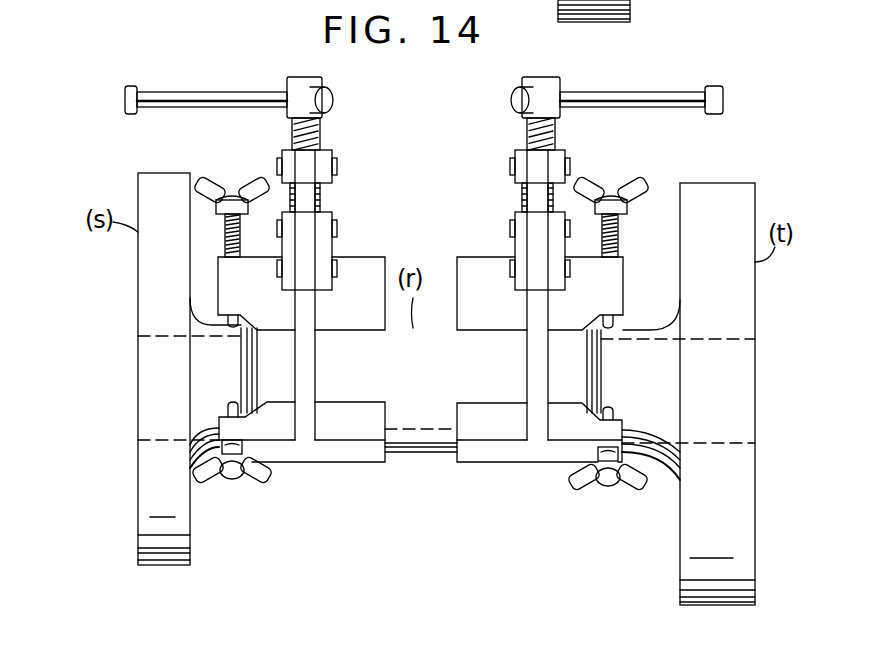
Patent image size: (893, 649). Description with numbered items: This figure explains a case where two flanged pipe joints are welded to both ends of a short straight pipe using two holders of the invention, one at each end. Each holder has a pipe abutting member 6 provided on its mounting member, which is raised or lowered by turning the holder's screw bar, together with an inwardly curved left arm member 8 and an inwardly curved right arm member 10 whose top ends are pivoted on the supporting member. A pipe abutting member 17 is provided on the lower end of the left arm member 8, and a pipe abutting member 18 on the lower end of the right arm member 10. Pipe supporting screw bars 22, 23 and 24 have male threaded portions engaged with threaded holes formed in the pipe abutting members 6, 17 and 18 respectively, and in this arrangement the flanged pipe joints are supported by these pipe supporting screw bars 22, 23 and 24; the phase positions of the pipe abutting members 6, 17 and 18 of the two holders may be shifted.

The pipe abutting member 6 is at (366, 257).
The left arm member 8 is at (535, 205).
The right arm member 10 is at (312, 200).
The pipe abutting member 17 is at (525, 452).
The pipe abutting member 18 is at (340, 452).
The pipe supporting screw bar 22 is at (224, 240).
The pipe supporting screw bar 23 is at (587, 478).
The pipe supporting screw bar 24 is at (233, 477).